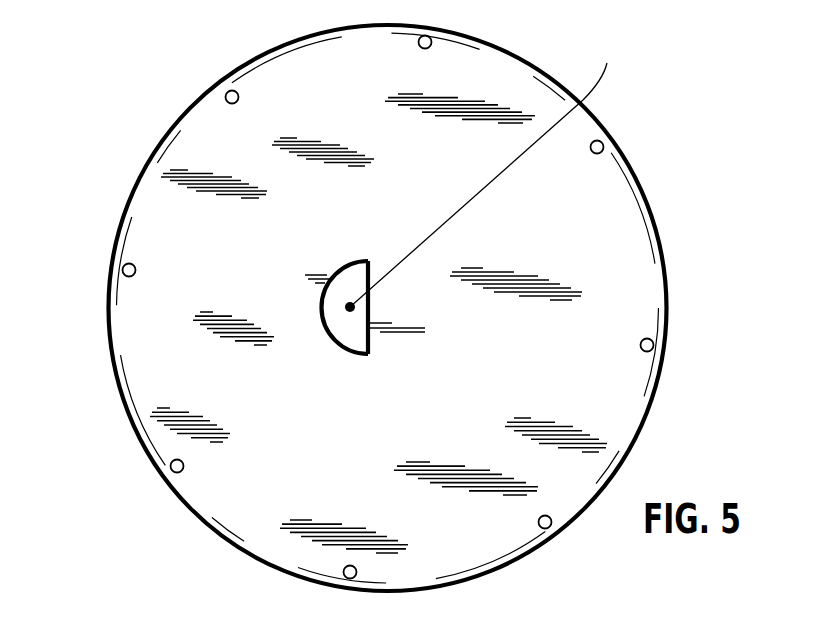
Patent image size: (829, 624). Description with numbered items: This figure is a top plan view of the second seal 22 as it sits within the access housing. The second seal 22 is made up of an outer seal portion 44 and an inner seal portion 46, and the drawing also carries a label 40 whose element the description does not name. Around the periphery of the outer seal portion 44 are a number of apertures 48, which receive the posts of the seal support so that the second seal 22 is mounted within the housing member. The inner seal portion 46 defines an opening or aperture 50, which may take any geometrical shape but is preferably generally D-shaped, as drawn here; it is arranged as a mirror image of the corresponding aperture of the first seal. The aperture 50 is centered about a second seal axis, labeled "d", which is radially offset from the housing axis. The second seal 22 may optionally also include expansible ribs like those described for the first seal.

The second seal 22 is at (672, 188).
The peripheral rim 40 is at (128, 248).
The outer seal portion 44 is at (593, 337).
The inner seal portion 46 is at (355, 252).
The apertures 48 is at (171, 470).
The aperture 50 is at (350, 307).